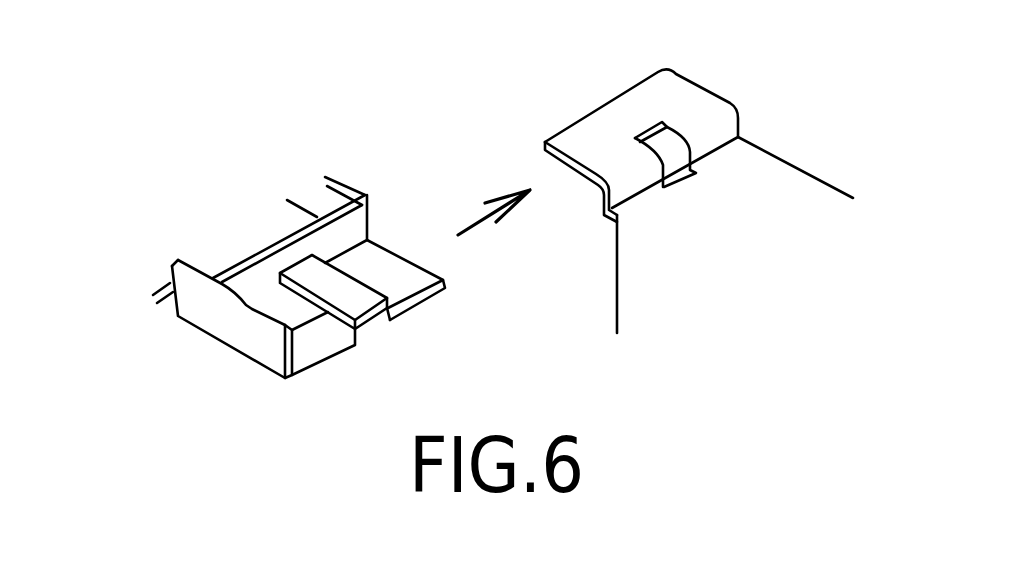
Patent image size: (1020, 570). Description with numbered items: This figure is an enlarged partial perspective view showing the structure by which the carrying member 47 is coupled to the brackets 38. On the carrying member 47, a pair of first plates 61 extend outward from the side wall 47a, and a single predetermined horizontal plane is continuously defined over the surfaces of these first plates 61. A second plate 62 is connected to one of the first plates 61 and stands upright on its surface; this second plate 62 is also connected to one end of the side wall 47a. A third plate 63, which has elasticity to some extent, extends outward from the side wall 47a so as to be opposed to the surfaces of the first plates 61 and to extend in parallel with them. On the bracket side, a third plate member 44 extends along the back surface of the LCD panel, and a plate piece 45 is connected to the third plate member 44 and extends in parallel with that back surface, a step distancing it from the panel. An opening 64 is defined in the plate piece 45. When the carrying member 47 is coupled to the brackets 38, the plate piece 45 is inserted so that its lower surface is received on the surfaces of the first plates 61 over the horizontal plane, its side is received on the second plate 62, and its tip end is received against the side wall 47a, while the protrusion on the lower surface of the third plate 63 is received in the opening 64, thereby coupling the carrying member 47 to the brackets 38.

The bracket 38 is at (613, 308).
The third plate member 44 is at (789, 163).
The plate piece 45 is at (594, 110).
The carrying member 47 is at (170, 276).
The side wall 47a is at (279, 238).
The first plate 61 is at (313, 363).
The second plate 62 is at (252, 338).
The third plate 63 is at (355, 278).
The opening 64 is at (667, 132).